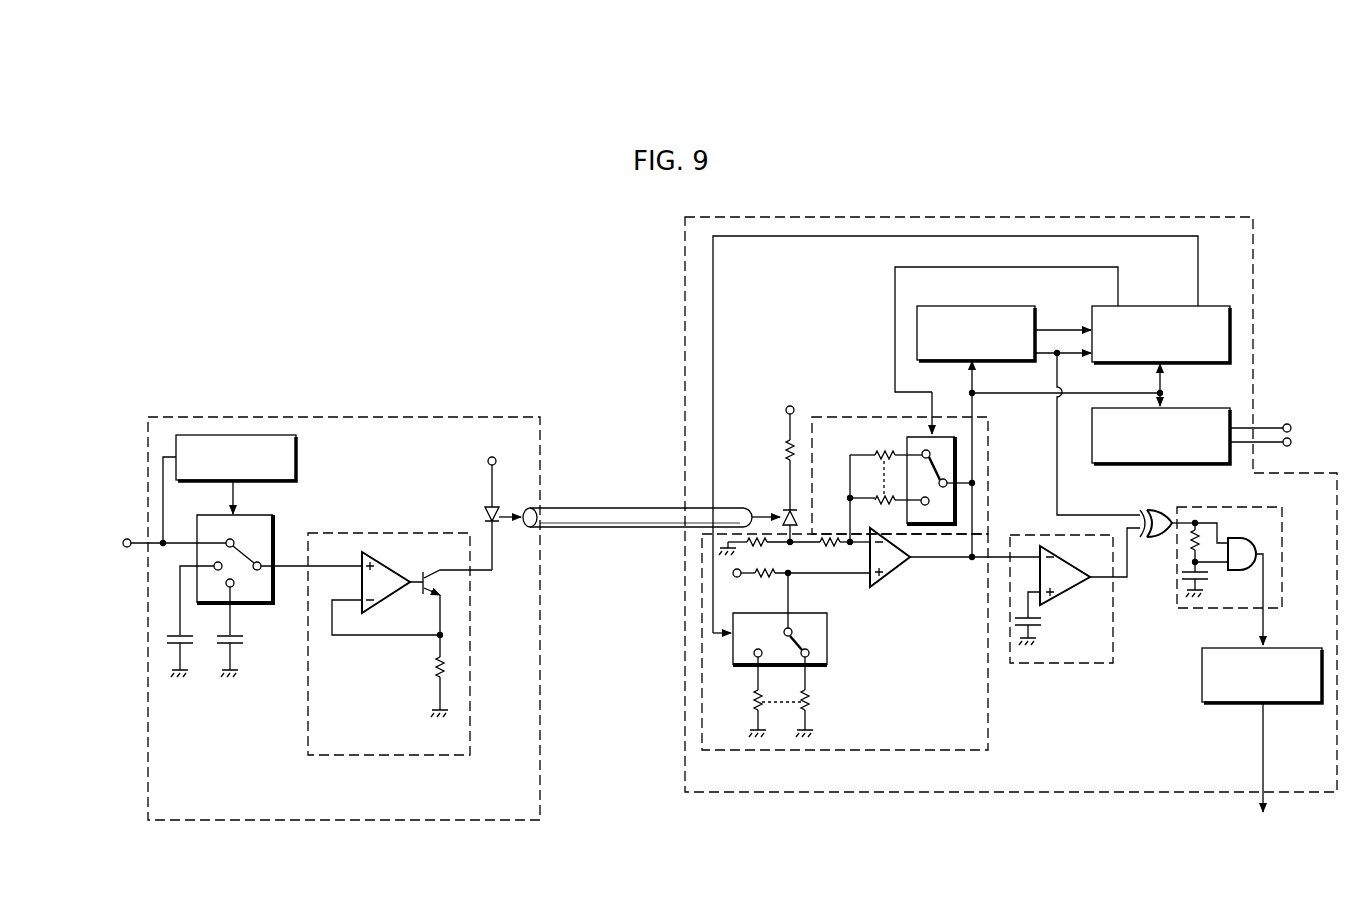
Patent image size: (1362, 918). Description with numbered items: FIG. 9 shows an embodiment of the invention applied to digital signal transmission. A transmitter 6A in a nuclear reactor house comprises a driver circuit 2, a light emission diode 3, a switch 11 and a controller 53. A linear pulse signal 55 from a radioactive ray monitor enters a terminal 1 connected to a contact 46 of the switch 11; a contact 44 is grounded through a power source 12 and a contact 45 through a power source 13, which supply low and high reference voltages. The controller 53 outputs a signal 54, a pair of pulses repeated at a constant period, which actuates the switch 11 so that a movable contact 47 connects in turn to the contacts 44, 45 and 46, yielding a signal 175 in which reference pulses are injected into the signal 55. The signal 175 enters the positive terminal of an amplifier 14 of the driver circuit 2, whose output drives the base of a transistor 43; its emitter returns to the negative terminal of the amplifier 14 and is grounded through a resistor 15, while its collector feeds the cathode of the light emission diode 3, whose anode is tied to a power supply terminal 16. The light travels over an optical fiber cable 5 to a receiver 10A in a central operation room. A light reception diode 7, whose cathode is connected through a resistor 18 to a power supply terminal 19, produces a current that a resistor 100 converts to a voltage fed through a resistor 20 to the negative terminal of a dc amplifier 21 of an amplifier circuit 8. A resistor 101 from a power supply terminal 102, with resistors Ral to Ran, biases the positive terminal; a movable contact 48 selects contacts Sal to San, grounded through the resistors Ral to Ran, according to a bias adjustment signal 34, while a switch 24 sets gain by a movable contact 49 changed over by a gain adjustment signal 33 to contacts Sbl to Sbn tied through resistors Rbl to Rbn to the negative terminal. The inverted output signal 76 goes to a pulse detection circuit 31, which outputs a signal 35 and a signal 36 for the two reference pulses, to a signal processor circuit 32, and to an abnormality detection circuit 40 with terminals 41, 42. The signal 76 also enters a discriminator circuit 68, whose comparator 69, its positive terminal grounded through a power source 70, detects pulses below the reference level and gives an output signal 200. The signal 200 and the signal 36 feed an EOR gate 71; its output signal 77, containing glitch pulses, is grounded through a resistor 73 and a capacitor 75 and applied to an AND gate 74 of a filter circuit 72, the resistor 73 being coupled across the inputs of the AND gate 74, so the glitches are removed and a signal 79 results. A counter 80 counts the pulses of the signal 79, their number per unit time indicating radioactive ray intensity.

The terminal 1 is at (126, 538).
The driver circuit 2 is at (375, 533).
The light emission diode 3 is at (484, 517).
The optical fiber cable 5 is at (622, 506).
The transmitter 6A is at (430, 417).
The light reception diode 7 is at (782, 513).
The amplifier circuit 8 is at (823, 415).
The receiver 10A is at (683, 346).
The switch 11 is at (259, 584).
The power source 12 is at (187, 640).
The power source 13 is at (240, 640).
The amplifier 14 is at (401, 576).
The resistor 15 is at (437, 672).
The power supply terminal 16 is at (488, 460).
The resistor 18 is at (785, 454).
The power supply terminal 19 is at (789, 407).
The resistor 20 is at (837, 538).
The dc amplifier 21 is at (908, 576).
The switch 24 is at (960, 542).
The pulse detection circuit 31 is at (976, 305).
The signal processor circuit 32 is at (1164, 305).
The gain adjustment signal 33 is at (895, 300).
The bias adjustment signal 34 is at (714, 302).
The signal 35 is at (1052, 328).
The signal 36 is at (1053, 356).
The abnormality detection circuit 40 is at (1190, 408).
The output terminal 41 is at (1287, 424).
The output terminal 42 is at (1291, 443).
The transistor 43 is at (430, 598).
The contact 44 is at (201, 598).
The contact 45 is at (250, 607).
The contact 46 is at (234, 541).
The movable contact 47 is at (261, 562).
The movable contact 48 is at (797, 634).
The movable contact 49 is at (958, 450).
The controller 53 is at (299, 452).
The signal 54 is at (236, 489).
The linear pulse signal 55 is at (166, 489).
The discriminator circuit 68 is at (1078, 665).
The comparator 69 is at (1074, 586).
The power source 70 is at (1037, 628).
The EOR gate 71 is at (1153, 508).
The filter circuit 72 is at (1193, 608).
The resistor 73 is at (1192, 546).
The AND gate 74 is at (1258, 538).
The capacitor 75 is at (1184, 604).
The signal 76 is at (976, 404).
The signal 77 is at (1182, 522).
The signal 79 is at (1264, 625).
The counter 80 is at (1200, 686).
The resistor 100 is at (764, 544).
The resistor 101 is at (766, 578).
The power supply terminal 102 is at (733, 573).
The signal 175 is at (340, 568).
The output signal 200 is at (1184, 578).
The contact Sb1 Sbl is at (924, 450).
The contact Sbn is at (937, 508).
The resistor Rb1 Rbl is at (886, 458).
The resistor Rbn is at (881, 482).
The contact San is at (755, 660).
The contact Sa1 Sal is at (809, 654).
The resistor Ran is at (753, 718).
The resistor Ra1 Ral is at (810, 704).